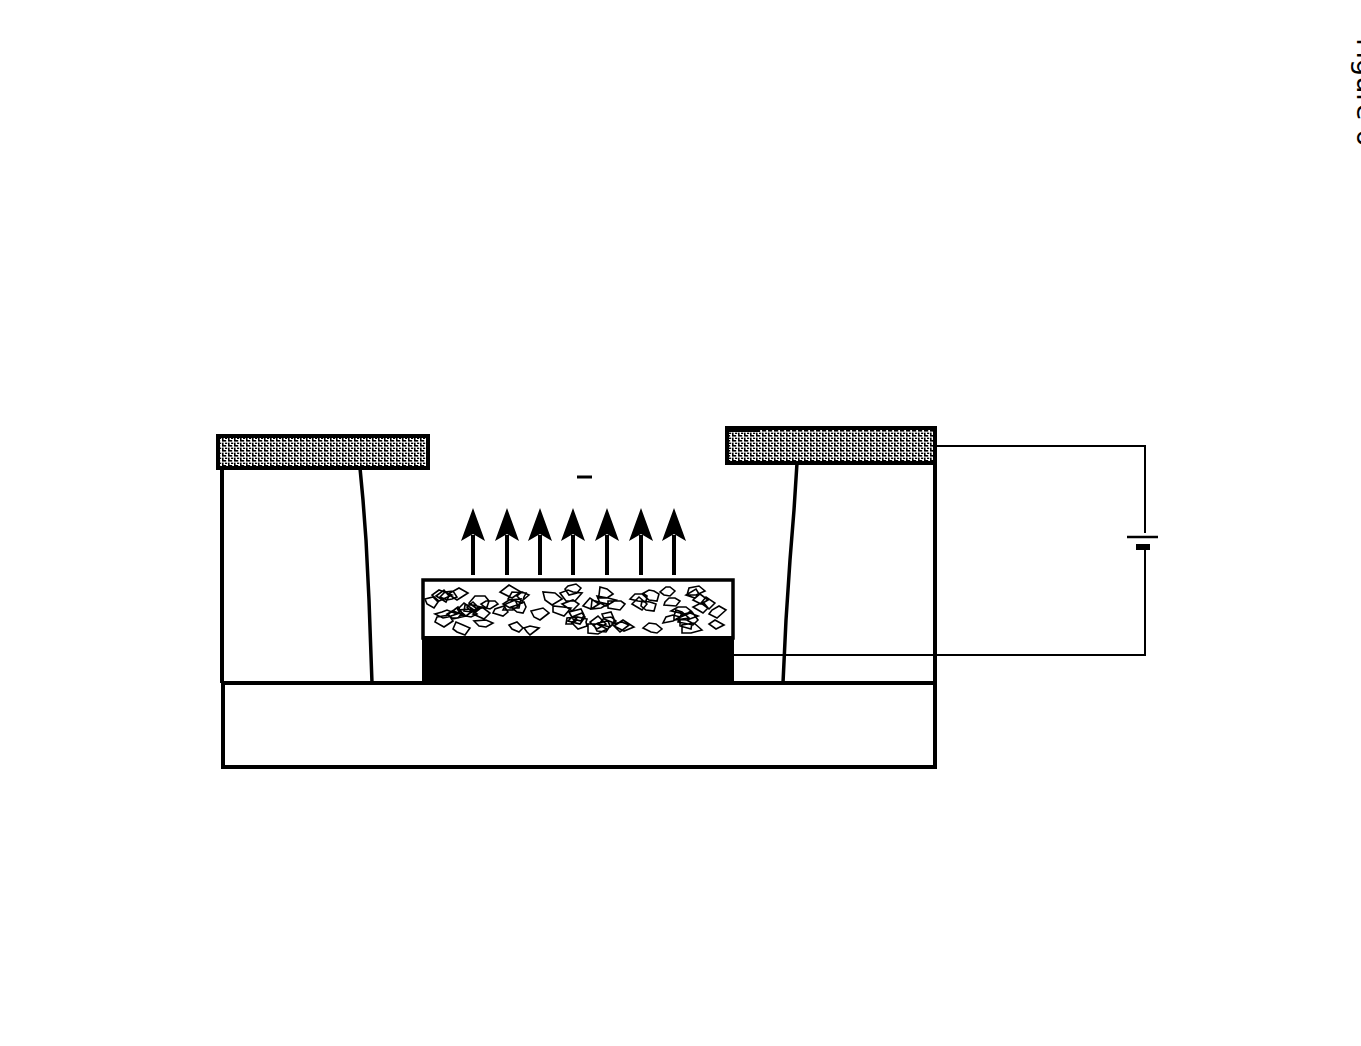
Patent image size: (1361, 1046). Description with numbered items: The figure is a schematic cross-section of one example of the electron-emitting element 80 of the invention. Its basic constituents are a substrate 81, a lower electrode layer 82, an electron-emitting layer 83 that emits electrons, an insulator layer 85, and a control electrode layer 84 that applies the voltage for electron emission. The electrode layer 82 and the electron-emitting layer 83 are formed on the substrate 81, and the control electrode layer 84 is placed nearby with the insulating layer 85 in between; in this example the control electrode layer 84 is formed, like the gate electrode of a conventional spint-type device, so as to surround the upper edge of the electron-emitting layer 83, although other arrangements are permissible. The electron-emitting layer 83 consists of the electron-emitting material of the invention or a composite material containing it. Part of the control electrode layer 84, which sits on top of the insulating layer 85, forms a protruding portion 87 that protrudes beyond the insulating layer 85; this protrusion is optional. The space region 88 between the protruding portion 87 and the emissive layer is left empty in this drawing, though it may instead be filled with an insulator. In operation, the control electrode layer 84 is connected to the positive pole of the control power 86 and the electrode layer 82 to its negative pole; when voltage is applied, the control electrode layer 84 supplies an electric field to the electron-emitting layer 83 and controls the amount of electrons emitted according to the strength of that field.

The electron-emitting element 80 is at (118, 433).
The substrate 81 is at (300, 737).
The electrode layer 82 is at (472, 684).
The electron-emitting layer 83 is at (445, 580).
The control electrode layer 84 is at (870, 430).
The insulator layer 85 is at (903, 525).
The control power 86 is at (1165, 540).
The protruding portion 87 is at (733, 430).
The space region 88 is at (733, 538).